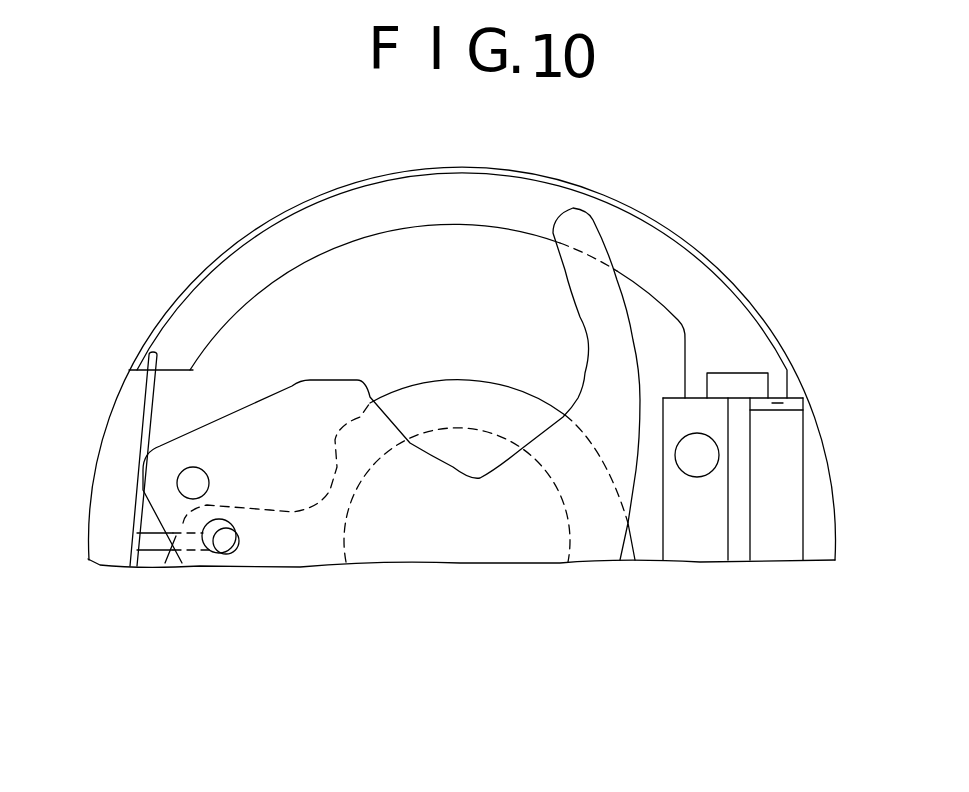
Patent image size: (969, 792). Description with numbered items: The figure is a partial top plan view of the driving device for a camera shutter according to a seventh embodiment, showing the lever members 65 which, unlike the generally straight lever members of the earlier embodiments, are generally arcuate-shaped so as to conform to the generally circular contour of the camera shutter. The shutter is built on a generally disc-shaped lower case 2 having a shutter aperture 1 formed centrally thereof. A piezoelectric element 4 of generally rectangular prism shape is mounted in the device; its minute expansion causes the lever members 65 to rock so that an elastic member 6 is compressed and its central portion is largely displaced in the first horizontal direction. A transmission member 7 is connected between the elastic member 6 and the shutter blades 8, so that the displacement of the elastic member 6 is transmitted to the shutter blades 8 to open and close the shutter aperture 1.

The shutter aperture 1 is at (570, 519).
The lower case 2 is at (369, 177).
The piezoelectric element 4 is at (783, 478).
The elastic member 6 is at (135, 483).
The transmission member 7 is at (155, 543).
The shutter blades 8 is at (272, 483).
The lever members 65 is at (468, 190).